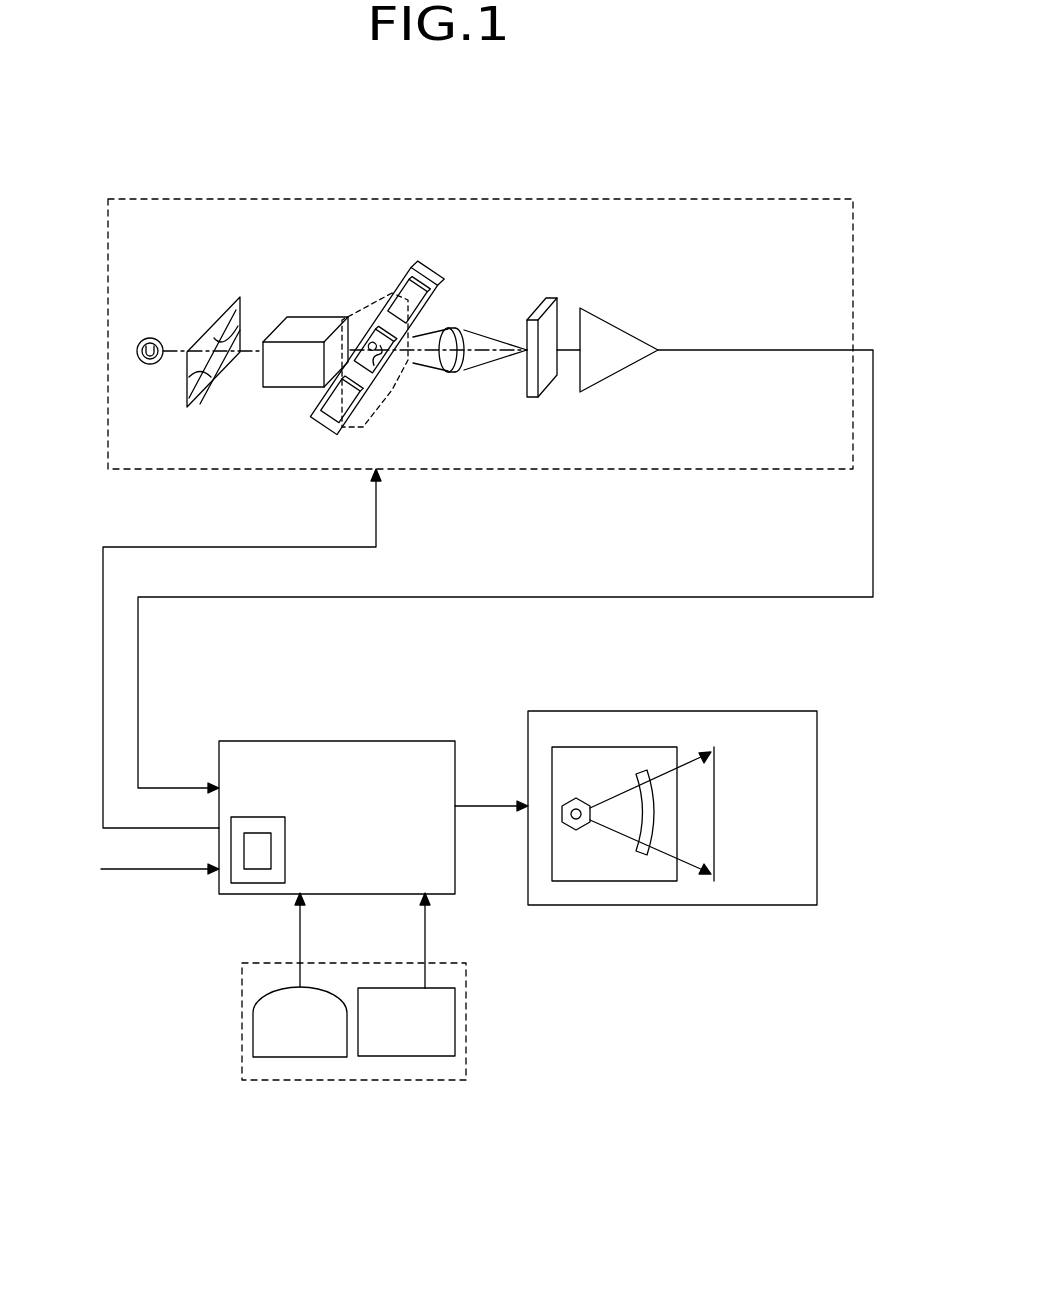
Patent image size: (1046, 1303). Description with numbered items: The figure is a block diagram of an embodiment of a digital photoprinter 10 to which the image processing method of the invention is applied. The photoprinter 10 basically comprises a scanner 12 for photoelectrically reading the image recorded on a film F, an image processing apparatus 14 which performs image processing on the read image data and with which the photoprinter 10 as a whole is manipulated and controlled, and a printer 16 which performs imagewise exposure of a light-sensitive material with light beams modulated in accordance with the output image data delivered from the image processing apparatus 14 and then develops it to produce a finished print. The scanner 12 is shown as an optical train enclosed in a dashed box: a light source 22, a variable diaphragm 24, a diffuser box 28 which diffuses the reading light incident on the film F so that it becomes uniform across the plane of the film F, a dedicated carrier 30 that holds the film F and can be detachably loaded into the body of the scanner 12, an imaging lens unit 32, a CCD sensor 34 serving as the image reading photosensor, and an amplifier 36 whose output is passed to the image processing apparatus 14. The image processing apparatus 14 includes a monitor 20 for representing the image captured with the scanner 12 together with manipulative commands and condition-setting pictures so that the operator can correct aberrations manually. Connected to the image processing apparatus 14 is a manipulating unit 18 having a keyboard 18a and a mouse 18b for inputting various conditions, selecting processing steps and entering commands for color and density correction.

The digital photoprinter 10 is at (597, 167).
The scanner 12 is at (317, 200).
The image processing apparatus 14 is at (256, 740).
The printer 16 is at (668, 711).
The manipulating unit 18 is at (355, 1081).
The keyboard 18a is at (418, 1057).
The mouse 18b is at (307, 1058).
The monitor 20 is at (248, 817).
The light source 22 is at (150, 338).
The variable diaphragm 24 is at (221, 316).
The diffuser box 28 is at (305, 332).
The carrier 30 is at (392, 390).
The imaging lens unit 32 is at (452, 328).
The CCD sensor 34 is at (546, 318).
The amplifier 36 is at (623, 374).
The film F is at (428, 300).